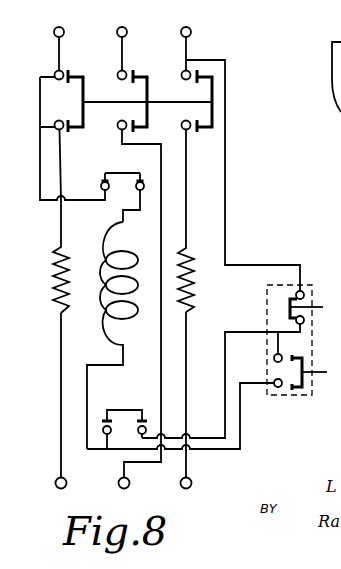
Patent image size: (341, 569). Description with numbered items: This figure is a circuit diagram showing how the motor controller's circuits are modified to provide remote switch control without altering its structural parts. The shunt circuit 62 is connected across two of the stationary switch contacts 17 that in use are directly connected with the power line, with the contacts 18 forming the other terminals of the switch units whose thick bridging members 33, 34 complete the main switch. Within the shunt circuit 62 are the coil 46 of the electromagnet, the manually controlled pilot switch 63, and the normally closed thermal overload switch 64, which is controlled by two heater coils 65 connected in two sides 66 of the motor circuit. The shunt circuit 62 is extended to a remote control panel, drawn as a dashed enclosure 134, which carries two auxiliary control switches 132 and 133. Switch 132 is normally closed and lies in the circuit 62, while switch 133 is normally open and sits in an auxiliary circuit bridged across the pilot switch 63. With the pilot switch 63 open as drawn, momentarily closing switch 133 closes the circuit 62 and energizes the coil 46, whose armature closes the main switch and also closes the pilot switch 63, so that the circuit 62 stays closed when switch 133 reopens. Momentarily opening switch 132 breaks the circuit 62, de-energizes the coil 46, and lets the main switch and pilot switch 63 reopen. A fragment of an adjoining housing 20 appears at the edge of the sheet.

The stationary switch contacts 17 is at (55, 72).
The contact 18 is at (54, 127).
The switch contact bar 33 is at (143, 84).
The switch contact 34 is at (125, 111).
The shunt circuit 62 is at (39, 173).
The heater coils 65 is at (55, 272).
The sides of the motor circuit 66 is at (60, 354).
The thermal overload switch 64 is at (130, 173).
The coil of the electromagnet 46 is at (128, 252).
The pilot switch 63 is at (124, 407).
The auxiliary control switch 132 is at (290, 300).
The auxiliary control switch 133 is at (304, 381).
The relay 134 is at (314, 344).
The housing 20 is at (332, 79).